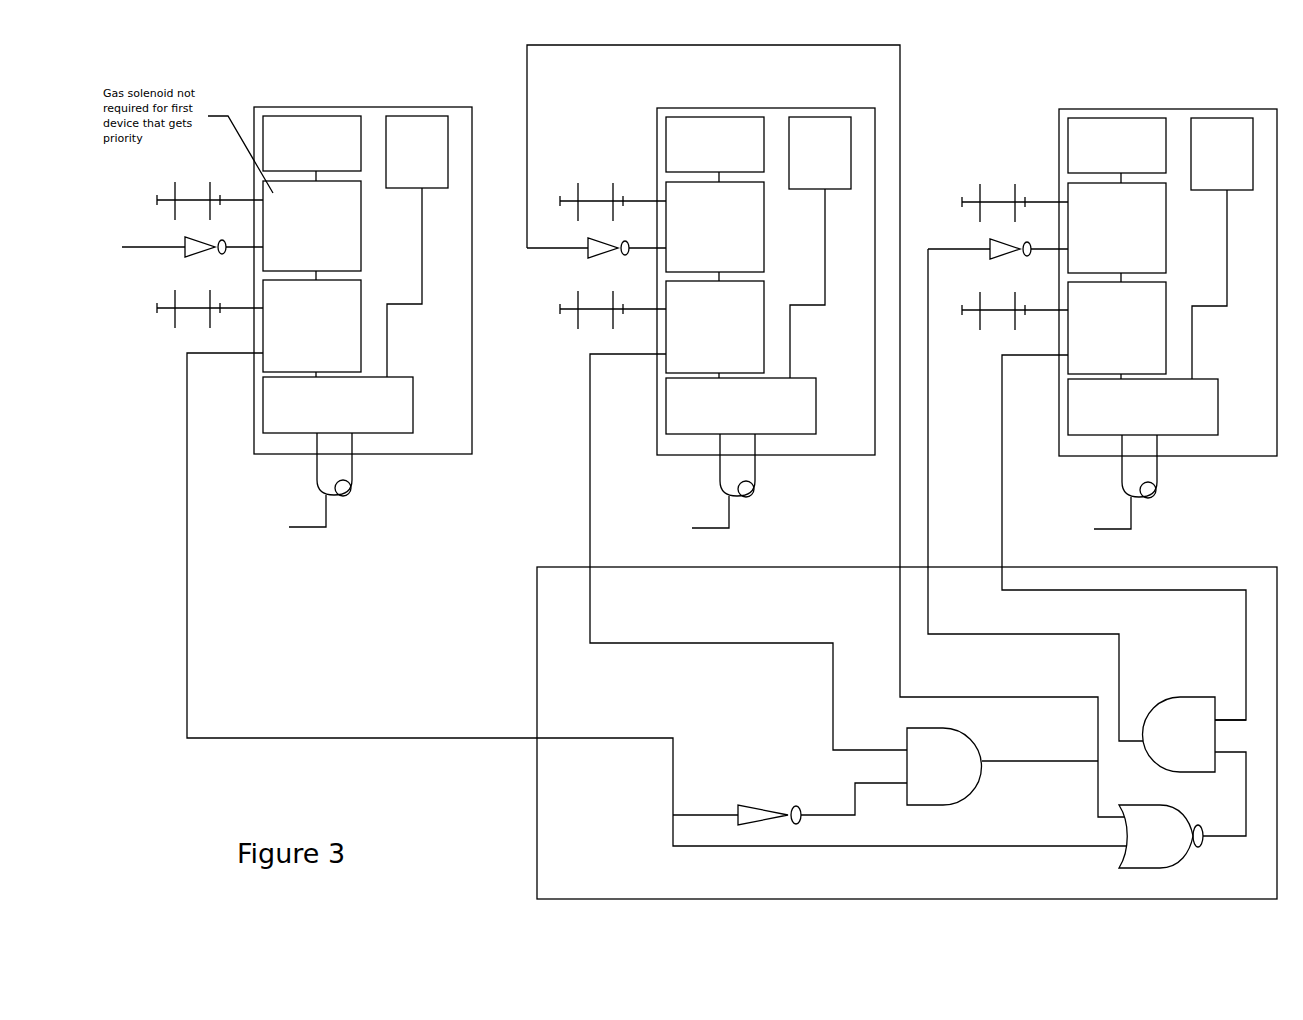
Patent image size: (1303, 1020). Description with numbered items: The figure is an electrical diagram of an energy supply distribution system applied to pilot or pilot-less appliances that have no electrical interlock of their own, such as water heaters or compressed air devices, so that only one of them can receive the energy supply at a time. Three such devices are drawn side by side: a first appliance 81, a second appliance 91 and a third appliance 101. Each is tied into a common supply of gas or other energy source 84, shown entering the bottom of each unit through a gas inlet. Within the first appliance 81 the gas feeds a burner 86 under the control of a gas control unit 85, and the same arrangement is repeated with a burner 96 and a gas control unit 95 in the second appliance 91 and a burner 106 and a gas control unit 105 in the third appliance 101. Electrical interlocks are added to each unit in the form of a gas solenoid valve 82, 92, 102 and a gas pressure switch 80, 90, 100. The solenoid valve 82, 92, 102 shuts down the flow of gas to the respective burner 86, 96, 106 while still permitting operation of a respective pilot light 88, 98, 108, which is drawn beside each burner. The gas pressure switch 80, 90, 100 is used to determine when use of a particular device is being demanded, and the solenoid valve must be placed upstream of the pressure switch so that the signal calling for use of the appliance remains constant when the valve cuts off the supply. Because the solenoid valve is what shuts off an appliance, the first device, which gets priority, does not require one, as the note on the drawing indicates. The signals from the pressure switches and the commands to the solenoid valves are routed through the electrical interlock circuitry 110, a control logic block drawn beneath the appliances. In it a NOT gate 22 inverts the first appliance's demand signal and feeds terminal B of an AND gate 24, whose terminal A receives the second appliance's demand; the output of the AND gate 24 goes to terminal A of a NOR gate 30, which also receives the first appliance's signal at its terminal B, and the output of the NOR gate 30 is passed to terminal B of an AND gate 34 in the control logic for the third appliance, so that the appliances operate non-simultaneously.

The first appliance 81 is at (390, 90).
The second appliance 91 is at (793, 91).
The third appliance 101 is at (1203, 91).
The burner 86 is at (312, 143).
The burner 96 is at (715, 144).
The burner 106 is at (1117, 145).
The gas solenoid valve 82 is at (312, 226).
The gas solenoid valve 92 is at (715, 227).
The gas solenoid valve 102 is at (1117, 228).
The gas pressure switch 80 is at (312, 326).
The gas pressure switch 90 is at (715, 327).
The gas pressure switch 100 is at (1117, 328).
The gas control unit 85 is at (338, 405).
The gas control unit 95 is at (741, 406).
The gas control unit 105 is at (1143, 407).
The pilot light 88 is at (417, 246).
The pilot light 98 is at (820, 247).
The pilot light 108 is at (1222, 248).
The supply of gas 84 is at (689, 484).
The electrical interlock circuitry 110 is at (1247, 567).
The NOT gate 22 is at (760, 800).
The AND gate 24 is at (1002, 766).
The AND gate 34 is at (1195, 766).
The NOR gate 30 is at (1161, 836).